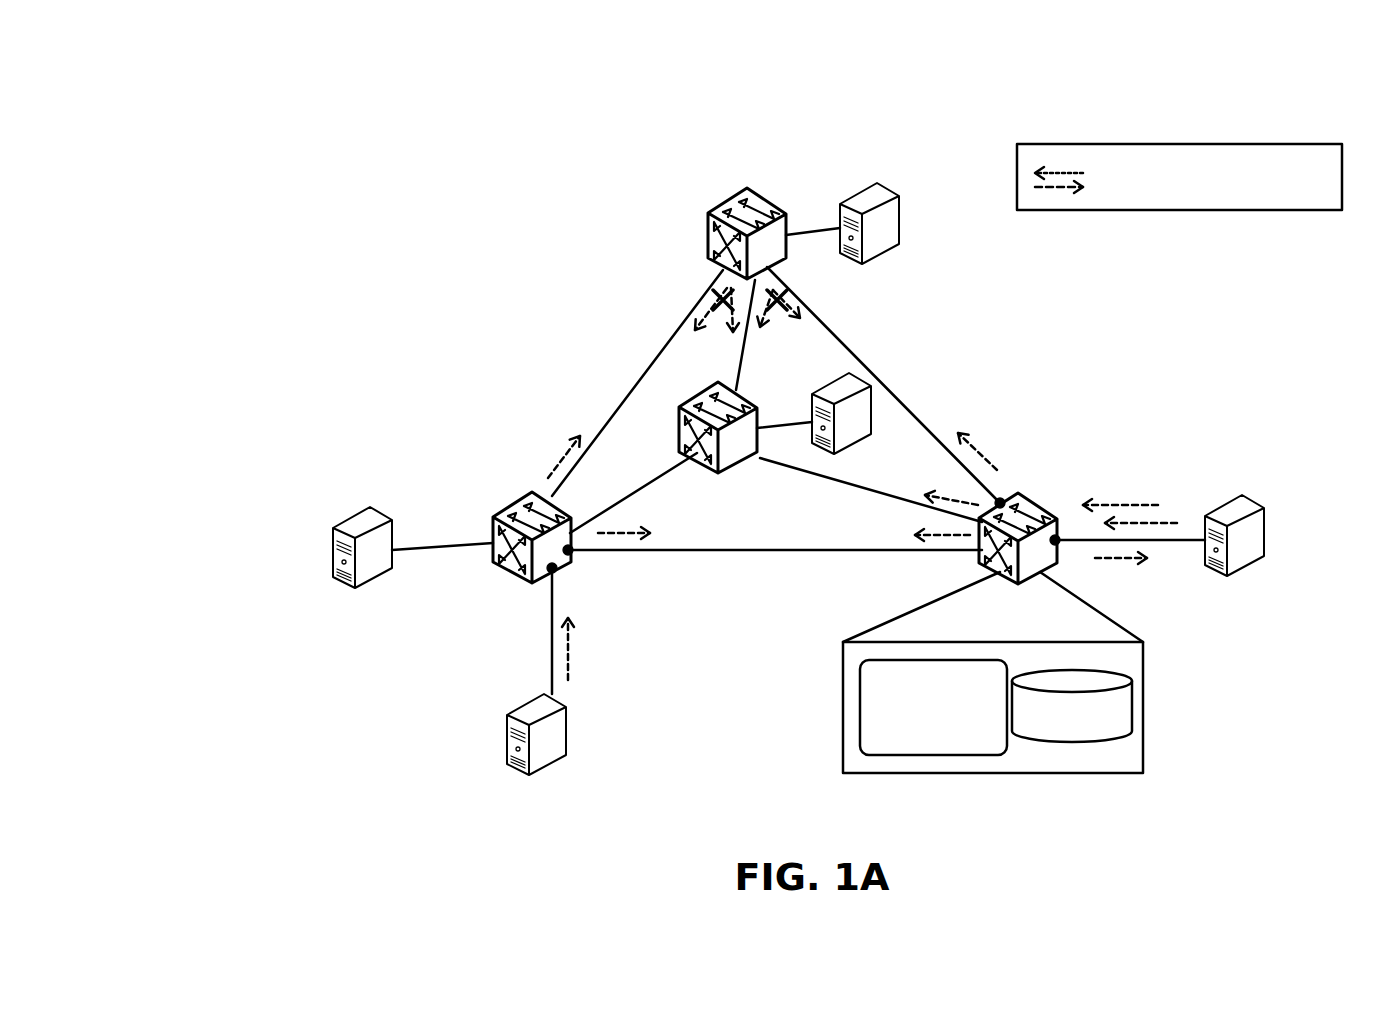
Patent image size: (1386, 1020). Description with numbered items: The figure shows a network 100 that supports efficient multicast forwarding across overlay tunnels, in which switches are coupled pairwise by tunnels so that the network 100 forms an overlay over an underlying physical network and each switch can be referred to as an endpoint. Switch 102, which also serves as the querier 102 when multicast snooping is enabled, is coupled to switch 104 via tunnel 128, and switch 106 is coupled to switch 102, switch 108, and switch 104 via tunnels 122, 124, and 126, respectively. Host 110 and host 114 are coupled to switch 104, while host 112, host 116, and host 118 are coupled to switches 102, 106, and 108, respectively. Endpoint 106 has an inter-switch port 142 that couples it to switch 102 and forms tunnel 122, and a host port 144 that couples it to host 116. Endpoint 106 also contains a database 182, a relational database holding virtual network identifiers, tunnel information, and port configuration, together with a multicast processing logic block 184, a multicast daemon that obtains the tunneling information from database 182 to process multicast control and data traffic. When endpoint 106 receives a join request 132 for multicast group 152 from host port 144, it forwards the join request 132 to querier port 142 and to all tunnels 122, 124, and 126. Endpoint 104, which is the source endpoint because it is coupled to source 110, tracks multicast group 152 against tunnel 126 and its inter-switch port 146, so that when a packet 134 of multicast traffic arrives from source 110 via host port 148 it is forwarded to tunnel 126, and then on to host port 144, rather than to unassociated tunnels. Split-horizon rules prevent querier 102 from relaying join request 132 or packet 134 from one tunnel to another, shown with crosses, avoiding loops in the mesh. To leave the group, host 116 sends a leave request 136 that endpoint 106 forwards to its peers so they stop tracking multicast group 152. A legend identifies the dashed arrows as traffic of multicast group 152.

The network 100 is at (283, 135).
The switch (querier) 102 is at (772, 205).
The switch (source endpoint) 104 is at (495, 520).
The switch (endpoint) 106 is at (1038, 500).
The switch 108 is at (693, 396).
The host (source) 110 is at (507, 743).
The host 112 is at (897, 222).
The host 114 is at (335, 558).
The host 116 is at (1263, 530).
The host 118 is at (870, 412).
The tunnel 122 is at (880, 380).
The tunnel 124 is at (863, 493).
The tunnel 126 is at (848, 552).
The tunnel 128 is at (648, 372).
The join request 132 is at (1117, 503).
The packet 134 is at (570, 653).
The multicast leave request 136 is at (1162, 522).
The inter-switch port (querier port) 142 is at (1000, 500).
The host port 144 is at (1060, 542).
The inter-switch port 146 is at (575, 552).
The host port 148 is at (550, 573).
The multicast group 152 is at (1179, 177).
The database 182 is at (1056, 726).
The multicast processing logic block 184 is at (950, 749).